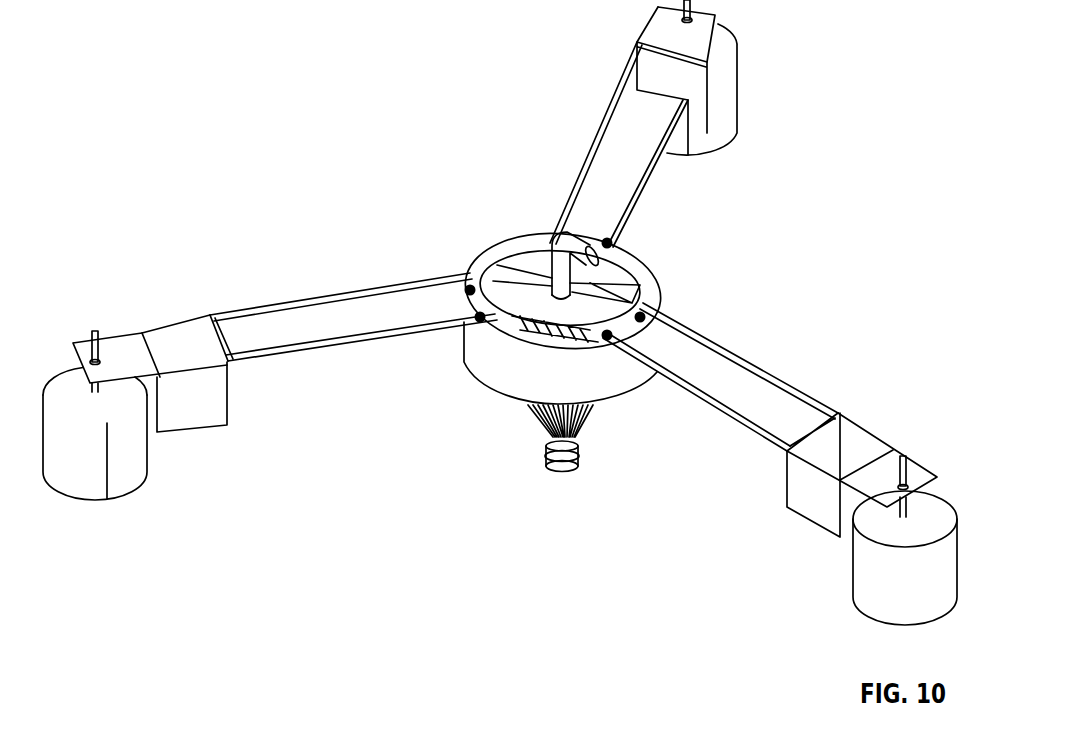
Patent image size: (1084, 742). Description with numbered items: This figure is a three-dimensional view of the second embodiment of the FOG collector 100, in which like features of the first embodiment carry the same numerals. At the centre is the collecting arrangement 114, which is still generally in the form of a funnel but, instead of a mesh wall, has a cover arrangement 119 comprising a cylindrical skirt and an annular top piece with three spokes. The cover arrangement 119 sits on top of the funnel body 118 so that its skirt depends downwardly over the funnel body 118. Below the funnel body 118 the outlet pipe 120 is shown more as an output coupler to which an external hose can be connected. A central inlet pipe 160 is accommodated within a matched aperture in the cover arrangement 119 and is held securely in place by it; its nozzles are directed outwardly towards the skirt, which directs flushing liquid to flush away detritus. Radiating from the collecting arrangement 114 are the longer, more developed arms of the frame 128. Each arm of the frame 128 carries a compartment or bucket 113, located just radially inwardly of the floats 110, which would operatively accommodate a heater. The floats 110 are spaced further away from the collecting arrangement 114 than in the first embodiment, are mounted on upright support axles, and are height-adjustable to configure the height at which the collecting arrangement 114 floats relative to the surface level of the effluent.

The FOG collector 100 is at (290, 136).
The floats 110 is at (97, 500).
The compartments or buckets 113 is at (815, 523).
The collecting arrangement 114 is at (629, 411).
The funnel body 118 is at (540, 421).
The cover arrangement 119 is at (496, 283).
The outlet pipe 120 is at (561, 472).
The frame 128 is at (358, 348).
The inlet pipe 160 is at (588, 243).